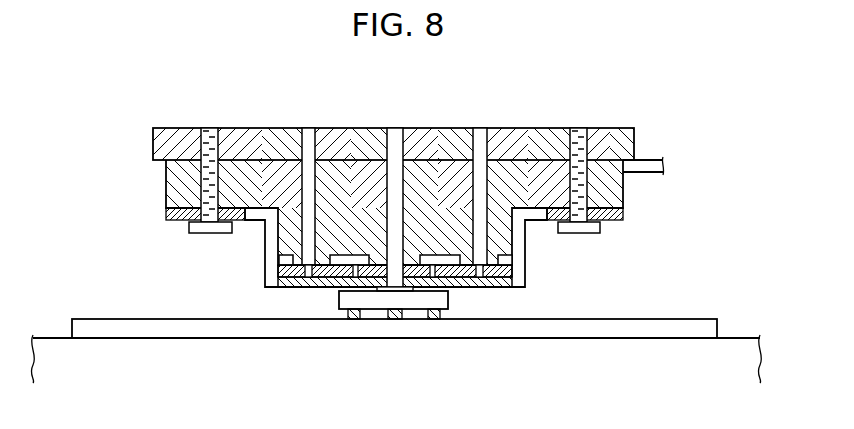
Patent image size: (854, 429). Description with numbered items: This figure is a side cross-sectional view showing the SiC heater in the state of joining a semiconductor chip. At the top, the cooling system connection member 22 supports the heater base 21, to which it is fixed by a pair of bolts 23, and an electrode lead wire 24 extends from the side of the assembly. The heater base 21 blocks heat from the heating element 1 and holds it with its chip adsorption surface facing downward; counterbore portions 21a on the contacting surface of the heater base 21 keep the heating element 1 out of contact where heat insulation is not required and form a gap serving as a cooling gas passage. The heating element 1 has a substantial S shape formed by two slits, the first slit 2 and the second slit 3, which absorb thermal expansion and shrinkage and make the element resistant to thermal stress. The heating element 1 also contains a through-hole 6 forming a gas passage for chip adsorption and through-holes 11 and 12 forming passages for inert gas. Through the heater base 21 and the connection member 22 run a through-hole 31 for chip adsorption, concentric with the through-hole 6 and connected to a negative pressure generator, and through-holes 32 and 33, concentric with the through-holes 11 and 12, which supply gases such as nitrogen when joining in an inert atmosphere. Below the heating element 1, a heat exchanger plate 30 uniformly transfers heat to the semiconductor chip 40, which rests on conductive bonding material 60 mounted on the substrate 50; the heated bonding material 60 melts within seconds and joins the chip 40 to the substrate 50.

The heating element 1 is at (525, 264).
The first slit 2 is at (330, 290).
The second slit 3 is at (463, 288).
The through-hole 6 is at (336, 292).
The through-hole 11 is at (307, 288).
The through-hole 12 is at (483, 288).
The heater base 21 is at (613, 190).
The counterbore portion 21a is at (507, 260).
The cooling system connection member 22 is at (630, 141).
The bolt 23 is at (192, 226).
The lead wire 24 is at (648, 160).
The heat exchanger plate 30 is at (500, 287).
The through-hole for chip adsorption 31 is at (395, 134).
The through-hole for supplying gases 32 is at (311, 134).
The through-hole for supplying gases 33 is at (478, 134).
The semiconductor chip 40 is at (443, 293).
The substrate 50 is at (690, 326).
The conductive bonding material 60 is at (437, 316).